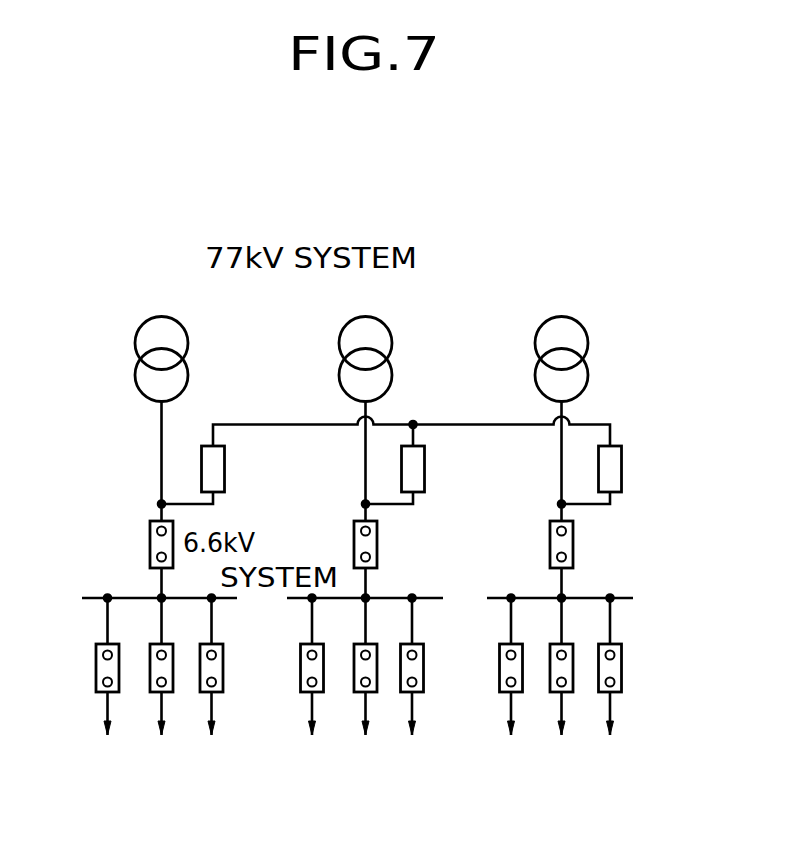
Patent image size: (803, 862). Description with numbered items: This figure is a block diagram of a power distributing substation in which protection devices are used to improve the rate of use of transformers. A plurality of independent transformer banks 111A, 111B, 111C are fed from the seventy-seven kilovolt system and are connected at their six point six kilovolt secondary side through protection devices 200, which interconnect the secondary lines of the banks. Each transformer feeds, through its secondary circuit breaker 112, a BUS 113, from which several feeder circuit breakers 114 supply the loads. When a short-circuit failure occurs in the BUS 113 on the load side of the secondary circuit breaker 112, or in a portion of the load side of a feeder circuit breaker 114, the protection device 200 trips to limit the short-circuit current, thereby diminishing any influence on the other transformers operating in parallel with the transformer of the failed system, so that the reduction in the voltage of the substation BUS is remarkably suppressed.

The transformer bank 111A is at (188, 343).
The transformer bank 111B is at (392, 343).
The transformer bank 111C is at (588, 344).
The protection device 200 is at (225, 470).
The secondary circuit breaker 112 is at (150, 540).
The BUS 113 is at (94, 597).
The feeder circuit breaker 114 is at (96, 673).